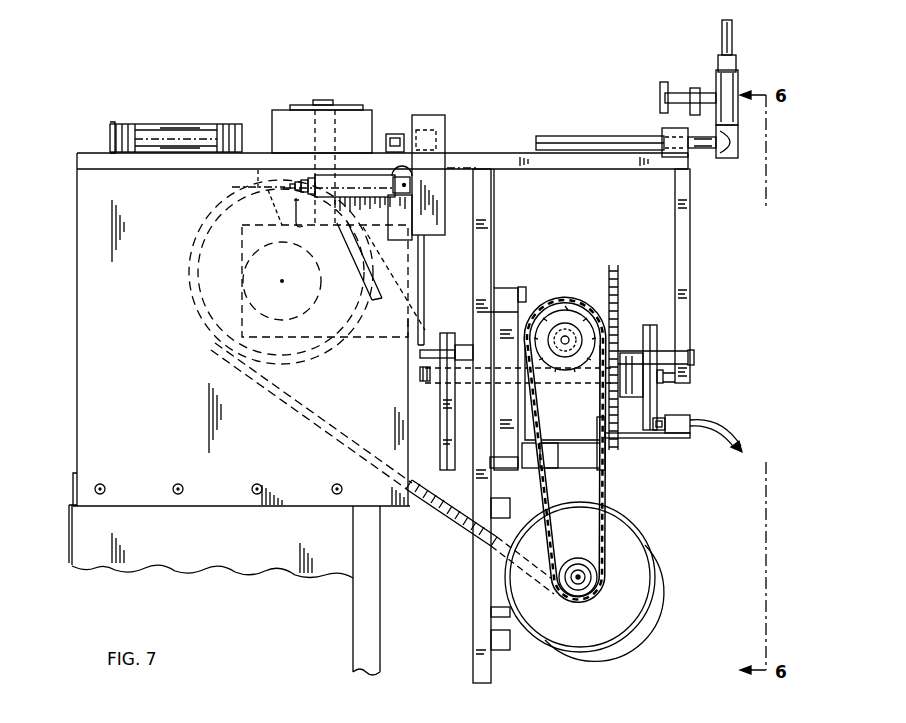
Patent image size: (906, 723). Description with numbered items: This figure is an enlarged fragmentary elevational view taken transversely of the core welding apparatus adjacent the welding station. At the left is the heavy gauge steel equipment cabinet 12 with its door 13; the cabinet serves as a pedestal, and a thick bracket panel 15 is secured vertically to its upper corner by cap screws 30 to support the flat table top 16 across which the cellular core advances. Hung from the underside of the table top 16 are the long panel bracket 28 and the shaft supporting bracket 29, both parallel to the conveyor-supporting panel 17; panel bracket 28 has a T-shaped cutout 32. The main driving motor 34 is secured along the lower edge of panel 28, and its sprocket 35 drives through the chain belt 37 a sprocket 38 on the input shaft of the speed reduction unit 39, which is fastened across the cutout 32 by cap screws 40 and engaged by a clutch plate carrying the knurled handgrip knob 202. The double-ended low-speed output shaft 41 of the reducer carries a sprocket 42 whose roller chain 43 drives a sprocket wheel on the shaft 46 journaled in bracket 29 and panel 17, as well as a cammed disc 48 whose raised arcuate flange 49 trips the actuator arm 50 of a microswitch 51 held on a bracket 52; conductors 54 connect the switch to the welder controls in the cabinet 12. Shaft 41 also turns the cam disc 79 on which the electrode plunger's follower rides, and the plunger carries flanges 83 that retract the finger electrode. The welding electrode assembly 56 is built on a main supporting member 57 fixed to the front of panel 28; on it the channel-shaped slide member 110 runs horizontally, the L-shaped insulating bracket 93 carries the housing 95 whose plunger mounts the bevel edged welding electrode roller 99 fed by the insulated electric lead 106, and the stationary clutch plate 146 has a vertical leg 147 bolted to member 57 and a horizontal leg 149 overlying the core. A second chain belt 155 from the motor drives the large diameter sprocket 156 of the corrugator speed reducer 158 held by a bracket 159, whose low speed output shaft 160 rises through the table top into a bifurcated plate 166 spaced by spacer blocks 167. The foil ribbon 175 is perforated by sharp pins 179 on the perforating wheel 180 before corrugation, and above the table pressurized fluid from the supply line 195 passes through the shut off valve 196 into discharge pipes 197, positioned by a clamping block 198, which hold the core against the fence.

The equipment cabinet 12 is at (240, 557).
The door 13 is at (70, 532).
The bracket panel 15 is at (85, 438).
The table top 16 is at (77, 152).
The conveyor-supporting panel 17 is at (363, 617).
The panel bracket 28 is at (491, 248).
The shaft supporting bracket 29 is at (690, 262).
The cap screws 30 is at (254, 494).
The T-shaped cutout 32 is at (492, 315).
The main driving motor 34 is at (562, 637).
The sprocket 35 is at (592, 577).
The chain belt 37 is at (603, 495).
The sprocket 38 is at (562, 372).
The speed reduction unit 39 is at (556, 458).
The cap screws 40 is at (522, 296).
The low-speed output shaft 41 is at (418, 378).
The sprocket 42 is at (618, 445).
The roller chain 43 is at (620, 280).
The shaft 46 is at (694, 357).
The cammed disc 48 is at (644, 327).
The raised arcuate flange 49 is at (653, 330).
The actuator arm 50 is at (677, 438).
The microswitch 51 is at (664, 430).
The bracket 52 is at (637, 440).
The conductors 54 is at (737, 425).
The welding electrode assembly 56 is at (395, 346).
The main supporting member 57 is at (463, 215).
The cam disc 79 is at (437, 425).
The flanges 83 is at (420, 360).
The L-shaped bracket 93 is at (356, 266).
The housing 95 is at (357, 175).
The welding electrode roller 99 is at (402, 236).
The insulated electric lead 106 is at (297, 223).
The channel-shaped slide member 110 is at (465, 352).
The stationary clutch plate 146 is at (447, 148).
The vertical leg 147 is at (447, 197).
The horizontal leg 149 is at (430, 114).
The chain belt 155 is at (437, 507).
The large diameter sprocket 156 is at (320, 368).
The speed reducer 158 is at (220, 347).
The bracket 159 is at (241, 197).
The low speed output shaft 160 is at (327, 106).
The bifurcated plate 166 is at (377, 90).
The spacer blocks 167 is at (280, 125).
The metal foil ribbon 175 is at (113, 130).
The sharp pins 179 is at (174, 106).
The perforating wheel 180 is at (137, 133).
The supply line 195 is at (733, 48).
The shut off valve 196 is at (697, 90).
The discharge pipes 197 is at (585, 137).
The clamping block 198 is at (692, 158).
The knurled handgrip knob 202 is at (563, 323).